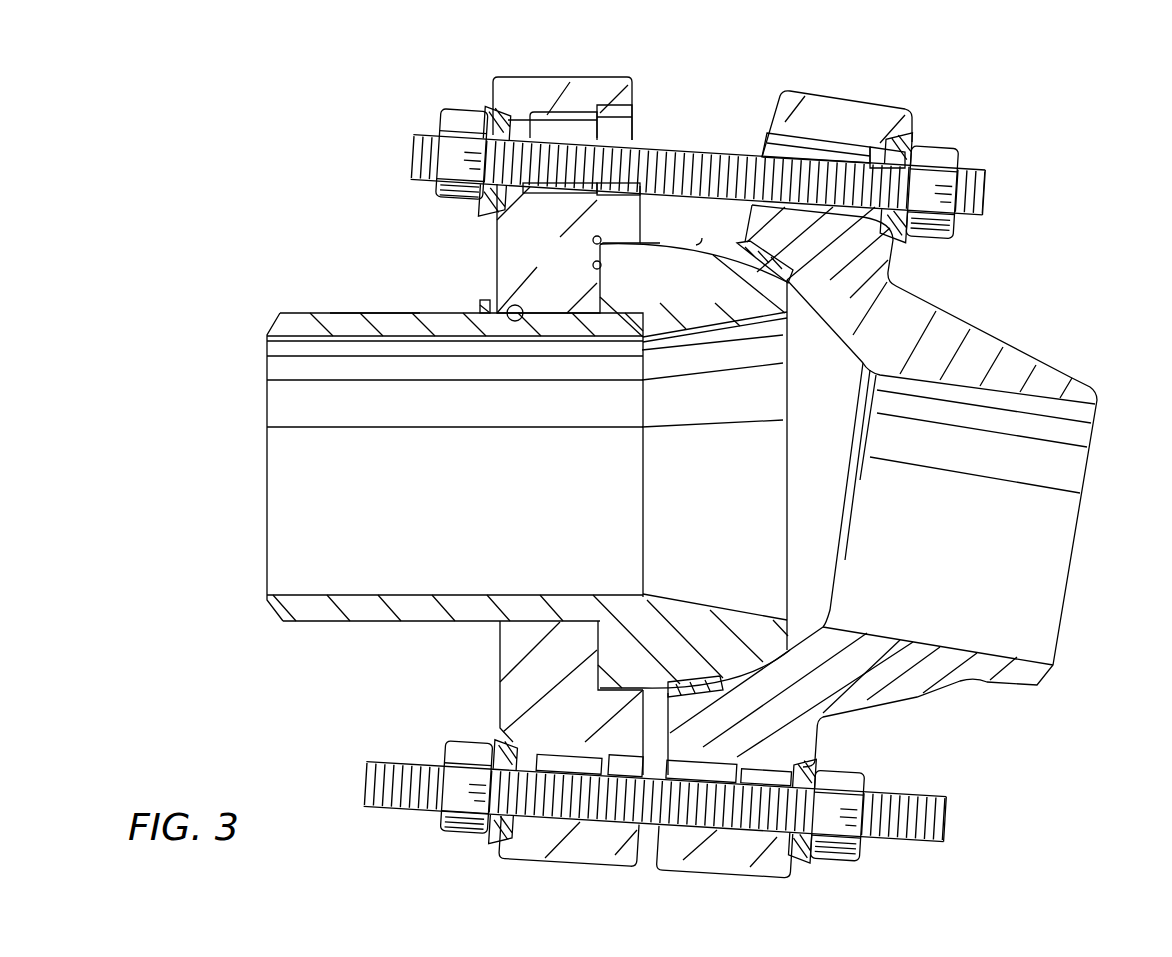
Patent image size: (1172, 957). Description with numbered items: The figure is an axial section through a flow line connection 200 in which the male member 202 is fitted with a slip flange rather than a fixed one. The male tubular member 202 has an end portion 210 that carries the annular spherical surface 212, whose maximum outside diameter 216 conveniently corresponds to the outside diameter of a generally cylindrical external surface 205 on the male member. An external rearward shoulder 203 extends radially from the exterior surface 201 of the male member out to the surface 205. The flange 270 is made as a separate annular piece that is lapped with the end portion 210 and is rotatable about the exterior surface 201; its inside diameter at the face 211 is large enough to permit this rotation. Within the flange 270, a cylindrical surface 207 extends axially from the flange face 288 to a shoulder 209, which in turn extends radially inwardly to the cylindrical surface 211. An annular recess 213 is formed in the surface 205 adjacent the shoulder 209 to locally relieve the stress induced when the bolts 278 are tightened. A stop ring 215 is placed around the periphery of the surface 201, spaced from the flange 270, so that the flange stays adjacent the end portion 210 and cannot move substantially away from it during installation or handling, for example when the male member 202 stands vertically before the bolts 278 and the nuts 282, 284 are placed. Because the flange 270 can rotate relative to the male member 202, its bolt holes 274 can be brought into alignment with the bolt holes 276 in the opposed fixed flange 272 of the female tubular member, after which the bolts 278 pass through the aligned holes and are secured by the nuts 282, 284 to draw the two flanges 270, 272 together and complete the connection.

The connection 200 is at (248, 217).
The exterior surface 201 is at (378, 313).
The male member 202 is at (267, 480).
The external rearward shoulder 203 is at (600, 285).
The generally cylindrical external surface 205 is at (650, 243).
The cylindrical surface 207 is at (690, 278).
The shoulder 209 is at (598, 267).
The end portion 210 is at (700, 616).
The face 211 is at (513, 313).
The annular spherical surface 212 is at (767, 262).
The annular recess 213 is at (597, 230).
The stop ring 215 is at (490, 300).
The maximum outside diameter 216 is at (697, 248).
The flange 270 is at (560, 77).
The female tubular member flange 272 is at (843, 92).
The bolt holes 274 is at (550, 120).
The bolt holes 276 is at (847, 143).
The bolts 278 is at (987, 198).
The nut 282 is at (452, 118).
The nut 284 is at (947, 157).
The flange face 288 is at (677, 153).